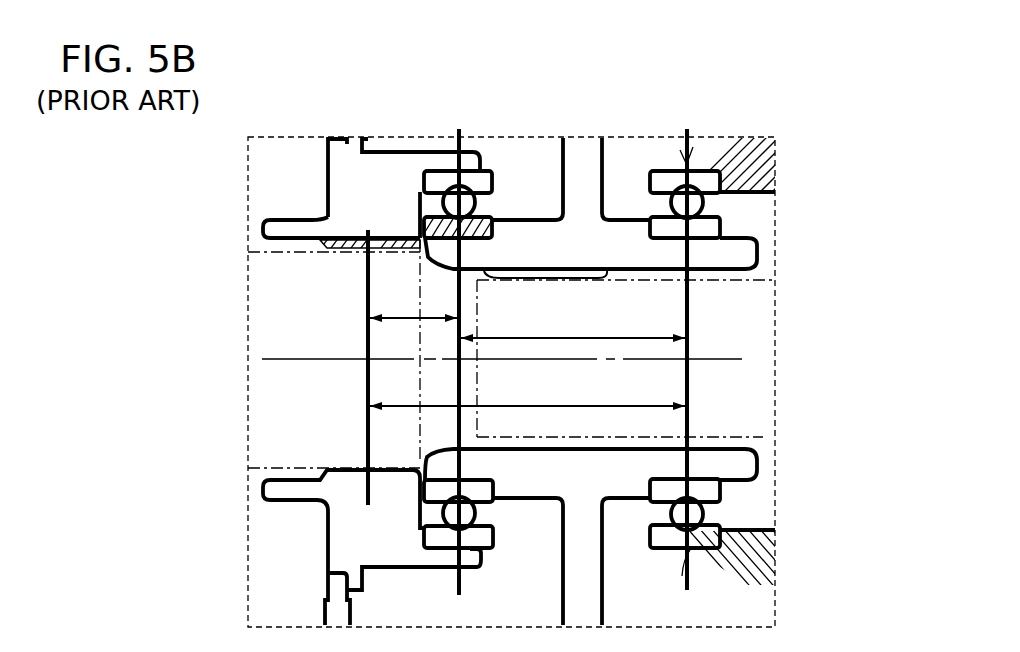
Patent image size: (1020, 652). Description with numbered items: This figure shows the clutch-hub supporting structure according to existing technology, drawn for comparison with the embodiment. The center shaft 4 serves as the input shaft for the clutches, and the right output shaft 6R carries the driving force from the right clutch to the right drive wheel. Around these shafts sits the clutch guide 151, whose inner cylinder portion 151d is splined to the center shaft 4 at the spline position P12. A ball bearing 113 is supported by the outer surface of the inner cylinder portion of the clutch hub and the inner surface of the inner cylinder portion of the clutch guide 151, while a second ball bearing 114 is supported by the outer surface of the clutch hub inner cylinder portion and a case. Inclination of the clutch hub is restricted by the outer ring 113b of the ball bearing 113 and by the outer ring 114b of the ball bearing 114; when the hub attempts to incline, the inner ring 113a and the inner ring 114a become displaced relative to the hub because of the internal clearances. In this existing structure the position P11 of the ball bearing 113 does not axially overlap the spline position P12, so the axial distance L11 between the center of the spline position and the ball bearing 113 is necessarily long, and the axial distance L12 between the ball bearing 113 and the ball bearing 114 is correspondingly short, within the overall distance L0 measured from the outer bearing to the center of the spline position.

The clutch guide 151 is at (302, 174).
The inner cylinder portion of the clutch guide 151d is at (352, 230).
The center shaft 4 is at (260, 252).
The position of the ball bearing P11 is at (417, 237).
The spline position P12 is at (340, 252).
The axial distance between the spline position center and the ball bearing L11 is at (408, 317).
The axial distance between the ball bearings L12 is at (573, 326).
The distance L0 is at (527, 395).
The ball bearing 113 is at (510, 351).
The inner ring of the ball bearing 113a is at (495, 220).
The outer ring of the ball bearing 113b is at (468, 182).
The ball bearing 114 is at (738, 330).
The inner ring of the ball bearing 114a is at (753, 230).
The outer ring of the ball bearing 114b is at (673, 178).
The right output shaft 6R is at (763, 437).